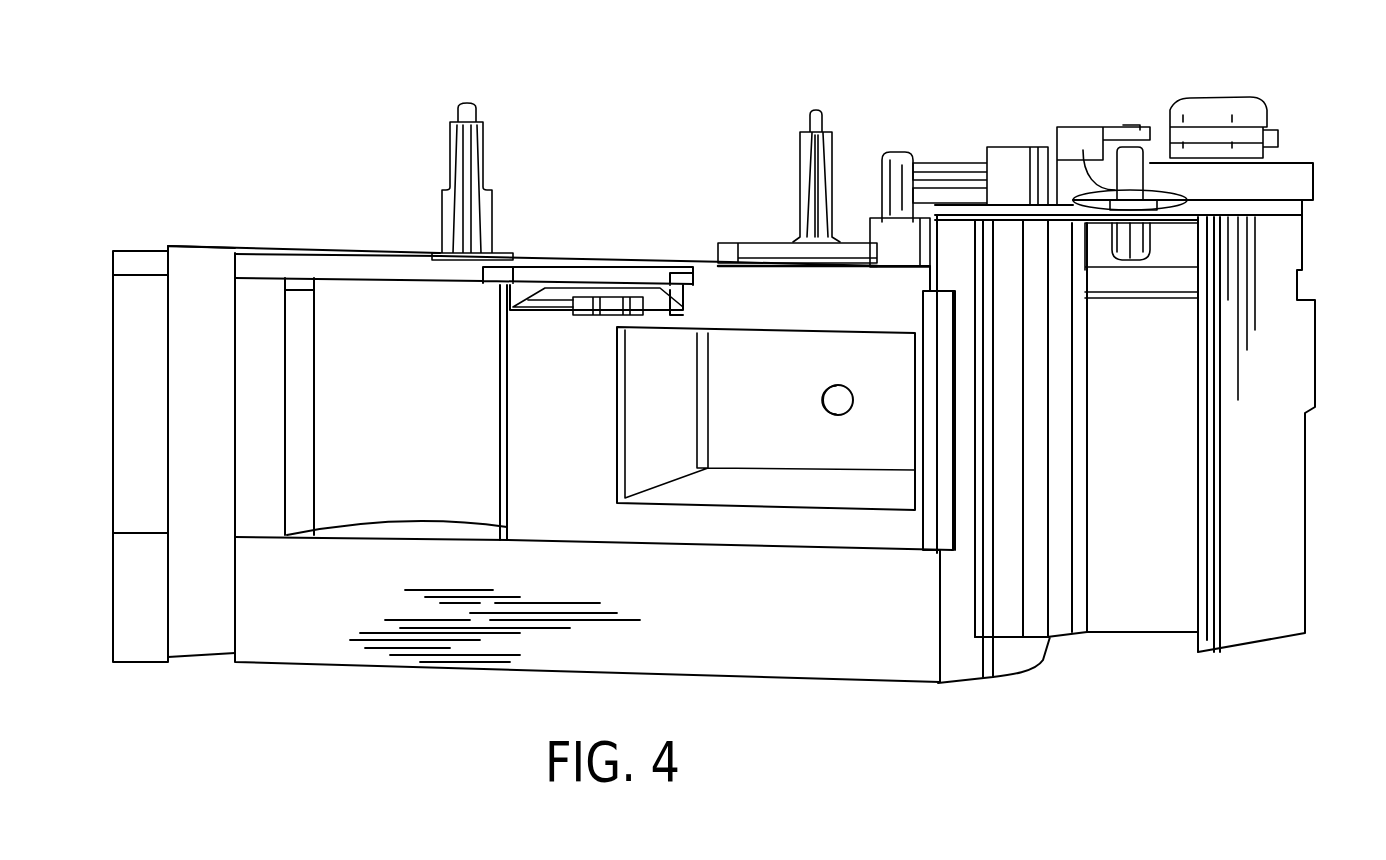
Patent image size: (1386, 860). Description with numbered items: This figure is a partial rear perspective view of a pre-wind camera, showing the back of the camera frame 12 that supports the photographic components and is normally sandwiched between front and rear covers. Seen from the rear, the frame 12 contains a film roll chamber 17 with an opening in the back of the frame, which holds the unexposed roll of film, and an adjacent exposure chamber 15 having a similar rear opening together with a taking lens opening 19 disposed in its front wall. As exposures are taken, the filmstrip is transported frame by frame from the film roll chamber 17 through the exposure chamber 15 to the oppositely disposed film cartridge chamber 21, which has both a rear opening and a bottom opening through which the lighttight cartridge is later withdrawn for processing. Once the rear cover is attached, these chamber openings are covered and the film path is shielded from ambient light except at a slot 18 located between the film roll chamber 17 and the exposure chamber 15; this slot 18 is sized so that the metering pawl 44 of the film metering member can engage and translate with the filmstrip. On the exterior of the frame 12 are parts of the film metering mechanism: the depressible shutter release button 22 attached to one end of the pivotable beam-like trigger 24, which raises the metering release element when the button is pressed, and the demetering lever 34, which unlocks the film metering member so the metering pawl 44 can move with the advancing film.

The frame 12 is at (262, 267).
The exposure chamber 15 is at (861, 490).
The film roll chamber 17 is at (367, 507).
The slot 18 is at (563, 295).
The taking lens opening 19 is at (826, 395).
The film cartridge chamber 21 is at (1173, 528).
The shutter release button 22 is at (1232, 97).
The trigger 24 is at (967, 180).
The demetering lever 34 is at (882, 233).
The metering pawl 44 is at (617, 297).